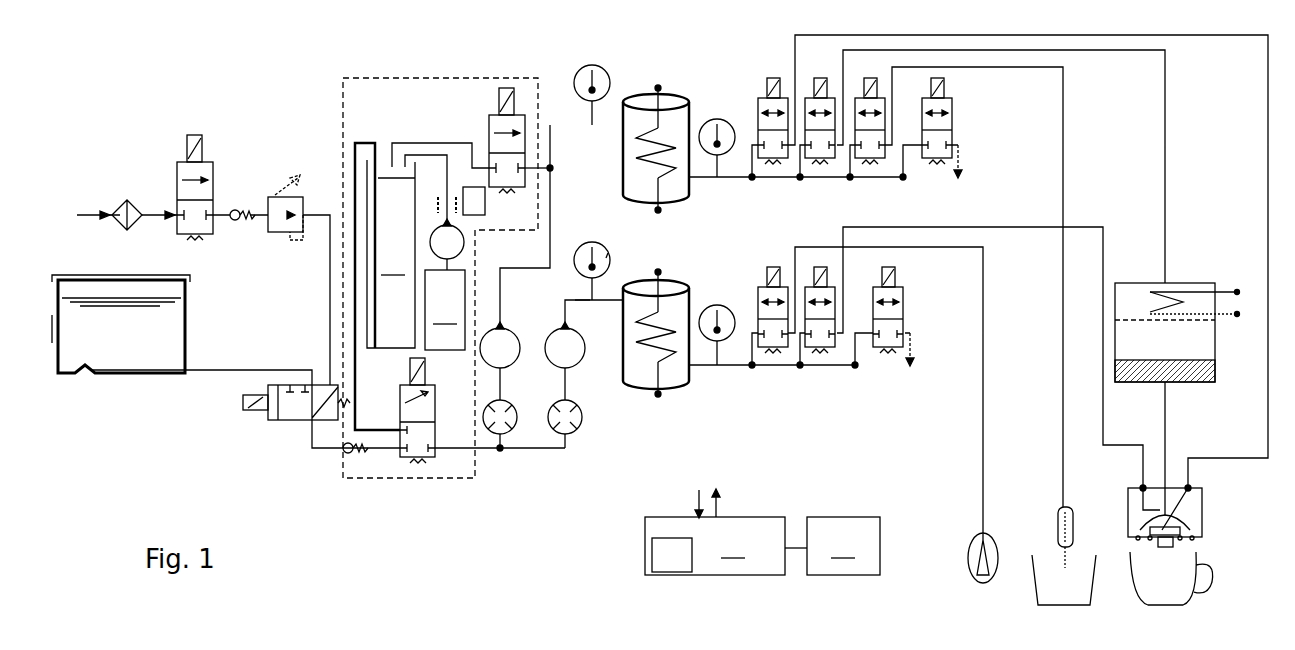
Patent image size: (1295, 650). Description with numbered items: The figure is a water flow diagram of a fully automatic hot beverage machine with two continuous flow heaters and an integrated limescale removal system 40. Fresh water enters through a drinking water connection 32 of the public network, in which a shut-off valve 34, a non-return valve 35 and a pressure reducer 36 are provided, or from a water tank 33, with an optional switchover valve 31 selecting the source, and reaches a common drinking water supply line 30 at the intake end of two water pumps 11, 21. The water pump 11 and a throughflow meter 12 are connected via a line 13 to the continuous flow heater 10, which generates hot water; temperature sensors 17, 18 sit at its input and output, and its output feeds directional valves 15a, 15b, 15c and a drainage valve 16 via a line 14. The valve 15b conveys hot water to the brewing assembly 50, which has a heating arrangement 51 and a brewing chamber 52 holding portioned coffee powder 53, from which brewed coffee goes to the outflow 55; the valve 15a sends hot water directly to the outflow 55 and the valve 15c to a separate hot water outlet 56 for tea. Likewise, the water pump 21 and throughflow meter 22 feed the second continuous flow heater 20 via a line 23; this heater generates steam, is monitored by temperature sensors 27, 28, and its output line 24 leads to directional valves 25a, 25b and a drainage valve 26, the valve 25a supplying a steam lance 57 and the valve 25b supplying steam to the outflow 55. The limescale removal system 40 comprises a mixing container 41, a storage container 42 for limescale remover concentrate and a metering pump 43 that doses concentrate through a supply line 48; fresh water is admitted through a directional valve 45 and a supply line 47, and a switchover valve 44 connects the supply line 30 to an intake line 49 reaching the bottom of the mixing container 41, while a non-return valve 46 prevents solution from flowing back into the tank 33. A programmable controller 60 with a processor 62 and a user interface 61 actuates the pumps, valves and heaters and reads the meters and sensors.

The continuous flow heater 10 is at (672, 103).
The water pump 11 is at (512, 333).
The throughflow meter 12 is at (512, 428).
The line 13 is at (553, 212).
The line 14 is at (732, 180).
The directional valve 15a is at (780, 152).
The directional valve 15b is at (828, 152).
The directional valve 15c is at (875, 152).
The drainage valve 16 is at (945, 152).
The temperature sensor 17 is at (606, 70).
The temperature sensor 18 is at (726, 120).
The second continuous flow heater 20 is at (680, 378).
The water pump 21 is at (582, 362).
The throughflow meter 22 is at (577, 428).
The line 23 is at (578, 302).
The line 24 is at (730, 368).
The directional valve 25a is at (780, 340).
The directional valve 25b is at (828, 340).
The drainage valve 26 is at (898, 345).
The temperature sensor 27 is at (608, 253).
The temperature sensor 28 is at (726, 306).
The drinking water supply line 30 is at (482, 450).
The switchover valve 31 is at (290, 422).
The drinking water connection 32 is at (121, 207).
The water tank 33 is at (95, 352).
The shut-off valve 34 is at (203, 233).
The non-return valve 35 is at (238, 222).
The pressure reducer 36 is at (273, 197).
The limescale removal system 40 is at (430, 78).
The mixing container 41 is at (391, 254).
The storage container 42 is at (445, 304).
The metering pump 43 is at (466, 245).
The switchover valve 44 is at (422, 458).
The directional valve 45 is at (520, 117).
The non-return valve 46 is at (353, 454).
The supply line 47 is at (400, 143).
The supply line 48 is at (432, 155).
The intake line 49 is at (353, 150).
The brewing assembly 50 is at (1188, 364).
The heating arrangement 51 is at (1225, 290).
The brewing chamber 52 is at (1200, 347).
The coffee powder 53 is at (1200, 371).
The outflow 55 is at (1203, 518).
The hot water outlet 56 is at (1055, 520).
The steam lance 57 is at (978, 540).
The controller 60 is at (726, 532).
The user interface 61 is at (843, 546).
The processor 62 is at (672, 555).